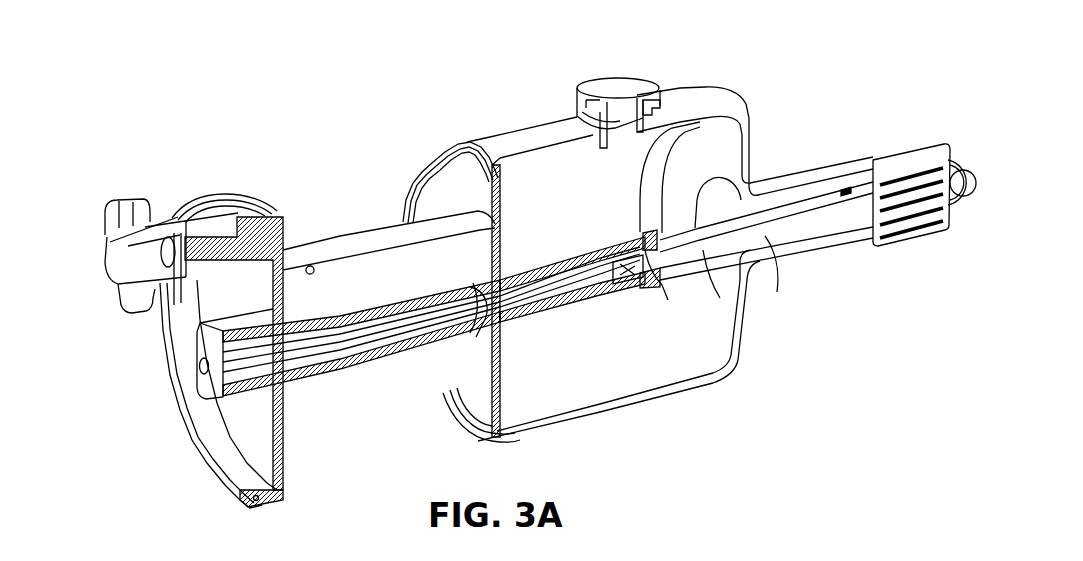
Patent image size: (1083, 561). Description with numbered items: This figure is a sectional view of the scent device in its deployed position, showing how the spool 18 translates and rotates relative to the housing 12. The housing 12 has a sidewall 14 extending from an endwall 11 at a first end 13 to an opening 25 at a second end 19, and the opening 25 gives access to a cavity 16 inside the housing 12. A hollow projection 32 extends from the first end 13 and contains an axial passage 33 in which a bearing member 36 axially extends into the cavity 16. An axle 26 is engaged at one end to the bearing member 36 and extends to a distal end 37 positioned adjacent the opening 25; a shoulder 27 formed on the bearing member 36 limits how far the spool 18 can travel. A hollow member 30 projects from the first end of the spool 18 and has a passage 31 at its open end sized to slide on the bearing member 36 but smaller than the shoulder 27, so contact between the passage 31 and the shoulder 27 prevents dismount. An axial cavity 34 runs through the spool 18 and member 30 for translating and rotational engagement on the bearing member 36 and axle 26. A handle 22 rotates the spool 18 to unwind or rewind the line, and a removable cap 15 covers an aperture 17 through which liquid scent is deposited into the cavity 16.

The endwall 11 is at (747, 165).
The housing 12 is at (747, 110).
The first end 13 is at (745, 378).
The sidewall 14 is at (520, 143).
The removable cap 15 is at (610, 83).
The cavity 16 is at (573, 377).
The aperture 17 is at (620, 117).
The spool 18 is at (210, 190).
The second end 19 is at (480, 438).
The handle 22 is at (157, 213).
The opening 25 is at (435, 162).
The axle 26 is at (583, 288).
The shoulder 27 is at (650, 264).
The member 30 is at (553, 258).
The passage 31 is at (667, 260).
The hollow projection 32 is at (868, 166).
The axial passage 33 is at (806, 247).
The axial cavity 34 is at (356, 345).
The bearing member 36 is at (770, 237).
The distal end 37 is at (481, 318).